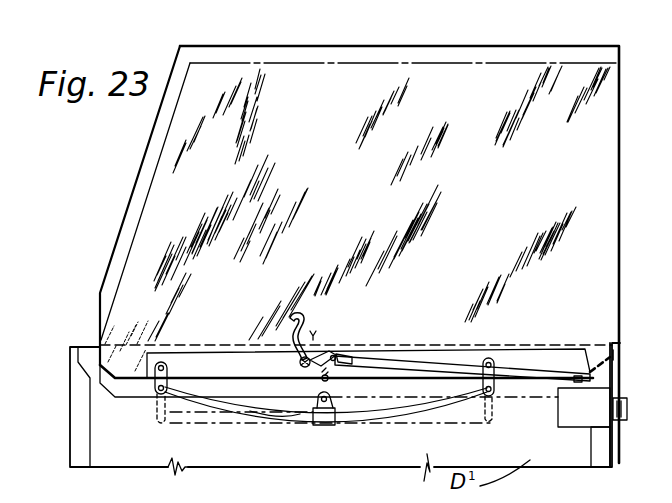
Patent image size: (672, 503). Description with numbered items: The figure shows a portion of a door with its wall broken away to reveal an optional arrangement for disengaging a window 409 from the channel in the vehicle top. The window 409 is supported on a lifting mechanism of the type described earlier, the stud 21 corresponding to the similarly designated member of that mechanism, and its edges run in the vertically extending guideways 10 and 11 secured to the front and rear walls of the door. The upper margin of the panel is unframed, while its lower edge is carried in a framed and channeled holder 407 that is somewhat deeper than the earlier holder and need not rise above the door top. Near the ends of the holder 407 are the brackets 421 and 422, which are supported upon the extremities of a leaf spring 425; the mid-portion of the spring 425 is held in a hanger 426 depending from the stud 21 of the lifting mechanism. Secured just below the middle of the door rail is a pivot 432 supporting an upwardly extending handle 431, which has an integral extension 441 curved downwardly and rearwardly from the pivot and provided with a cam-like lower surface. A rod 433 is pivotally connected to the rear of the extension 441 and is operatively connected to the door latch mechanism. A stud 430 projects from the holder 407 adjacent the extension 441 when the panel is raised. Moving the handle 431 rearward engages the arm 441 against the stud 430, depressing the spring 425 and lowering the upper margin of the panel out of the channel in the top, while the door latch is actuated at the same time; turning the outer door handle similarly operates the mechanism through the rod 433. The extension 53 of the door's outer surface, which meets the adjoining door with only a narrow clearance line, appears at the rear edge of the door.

The window 409 is at (612, 163).
The guideway 10 is at (90, 428).
The holder 407 is at (268, 372).
The bracket 421 is at (155, 383).
The bracket 422 is at (496, 390).
The hanger 426 is at (323, 426).
The leaf spring 425 is at (358, 420).
The stud 21 is at (293, 412).
The stud 430 is at (320, 376).
The handle 431 is at (312, 334).
The pivot 432 is at (320, 354).
The rod 433 is at (503, 372).
The extension 441 is at (342, 357).
The guideway 11 is at (584, 427).
The extension 53 is at (624, 418).